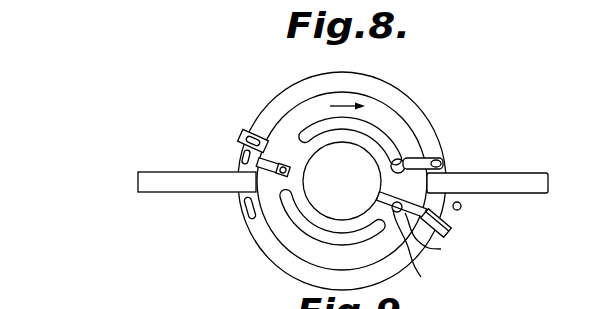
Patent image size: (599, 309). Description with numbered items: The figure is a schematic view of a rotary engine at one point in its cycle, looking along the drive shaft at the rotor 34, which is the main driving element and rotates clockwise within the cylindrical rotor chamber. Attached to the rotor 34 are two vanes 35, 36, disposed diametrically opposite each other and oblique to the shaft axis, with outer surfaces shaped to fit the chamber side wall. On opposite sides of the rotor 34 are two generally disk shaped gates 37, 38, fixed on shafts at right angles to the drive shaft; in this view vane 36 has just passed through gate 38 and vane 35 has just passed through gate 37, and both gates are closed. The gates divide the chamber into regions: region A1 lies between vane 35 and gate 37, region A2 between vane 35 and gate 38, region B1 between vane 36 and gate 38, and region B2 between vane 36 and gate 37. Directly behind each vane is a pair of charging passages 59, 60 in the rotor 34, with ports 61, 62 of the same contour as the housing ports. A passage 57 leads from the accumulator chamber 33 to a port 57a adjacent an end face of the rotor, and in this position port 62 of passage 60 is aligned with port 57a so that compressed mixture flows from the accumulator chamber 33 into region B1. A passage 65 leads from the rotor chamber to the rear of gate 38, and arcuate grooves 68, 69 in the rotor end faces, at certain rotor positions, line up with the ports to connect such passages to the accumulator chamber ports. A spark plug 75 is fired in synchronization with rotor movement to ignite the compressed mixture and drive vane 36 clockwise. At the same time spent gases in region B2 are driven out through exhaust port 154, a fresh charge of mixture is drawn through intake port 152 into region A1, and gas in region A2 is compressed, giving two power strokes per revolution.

The accumulator chamber 33 is at (347, 146).
The rotor 34 is at (300, 113).
The region A1 is at (270, 115).
The region A2 is at (387, 93).
The region B1 is at (443, 215).
The region B2 is at (258, 242).
The vane 35 is at (248, 141).
The vane 36 is at (444, 224).
The gate 37 is at (193, 183).
The gate 38 is at (478, 184).
The intake port 152 is at (243, 160).
The exhaust port 154 is at (248, 217).
The passage 57 is at (380, 201).
The port 57a is at (450, 297).
The charging passage 59 is at (272, 166).
The charging passage 60 is at (428, 245).
The port 61 is at (305, 167).
The port 62 is at (422, 277).
The passage 65 is at (427, 160).
The arcuate groove 68 is at (375, 130).
The arcuate groove 69 is at (310, 230).
The spark plug 75 is at (461, 206).